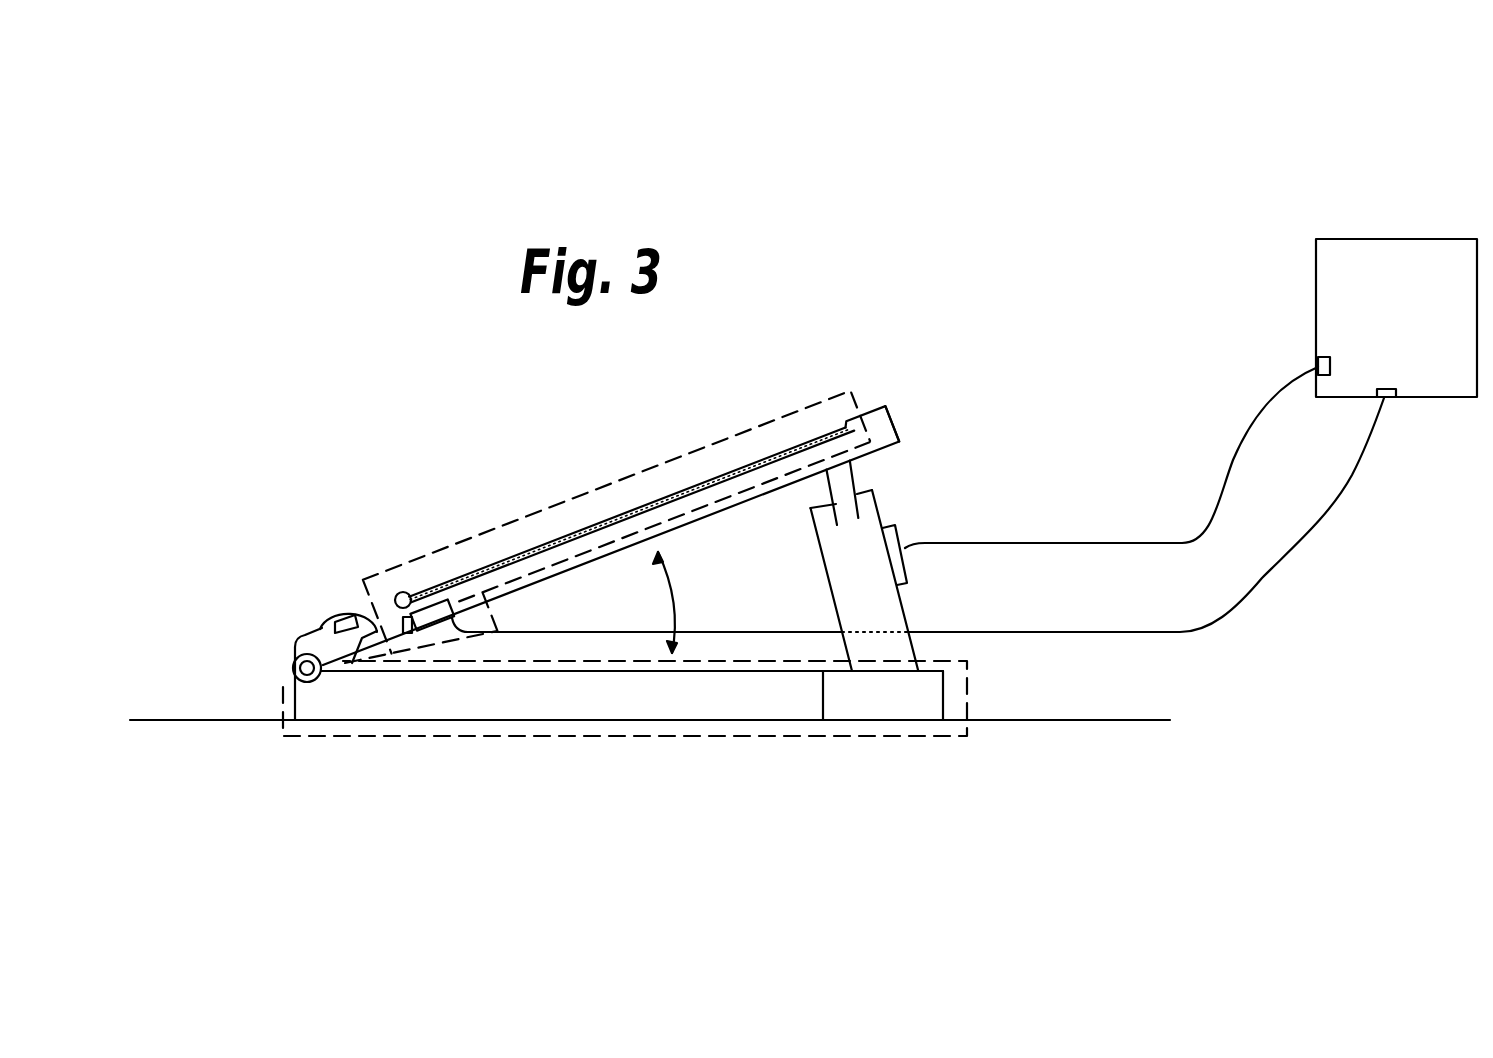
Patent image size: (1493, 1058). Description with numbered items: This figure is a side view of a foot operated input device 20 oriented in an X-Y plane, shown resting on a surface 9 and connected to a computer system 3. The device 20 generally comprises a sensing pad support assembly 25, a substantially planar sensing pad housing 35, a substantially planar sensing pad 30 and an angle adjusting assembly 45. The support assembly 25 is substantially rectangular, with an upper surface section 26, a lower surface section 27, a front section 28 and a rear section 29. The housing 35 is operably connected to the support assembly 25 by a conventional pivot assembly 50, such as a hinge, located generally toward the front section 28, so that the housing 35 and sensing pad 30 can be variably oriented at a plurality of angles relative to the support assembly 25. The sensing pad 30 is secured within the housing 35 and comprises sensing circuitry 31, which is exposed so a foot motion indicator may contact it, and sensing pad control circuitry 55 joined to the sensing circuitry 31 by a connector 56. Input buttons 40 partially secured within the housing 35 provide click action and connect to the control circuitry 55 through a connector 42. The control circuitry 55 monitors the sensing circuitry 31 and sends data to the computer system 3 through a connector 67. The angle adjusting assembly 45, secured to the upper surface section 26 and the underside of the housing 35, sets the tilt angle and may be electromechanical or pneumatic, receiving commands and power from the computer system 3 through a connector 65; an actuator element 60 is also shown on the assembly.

The computer system 3 is at (1400, 239).
The support surface 9 is at (180, 718).
The foot operated input device 20 is at (372, 410).
The sensing pad support assembly 25 is at (967, 736).
The upper surface section 26 is at (697, 671).
The lower surface section 27 is at (693, 720).
The front section 28 is at (290, 693).
The rear section 29 is at (943, 700).
The sensing pad 30 is at (757, 420).
The sensing circuitry 31 is at (523, 533).
The sensing pad housing 35 is at (886, 410).
The input buttons 40 is at (339, 612).
The connector 42 is at (352, 663).
The angle adjusting assembly 45 is at (860, 643).
The pivot assembly 50 is at (293, 664).
The sensing pad control circuitry 55 is at (425, 634).
The connector 56 is at (400, 592).
The linear actuator 60 is at (893, 528).
The connector 65 is at (1043, 550).
The connector 67 is at (1043, 633).